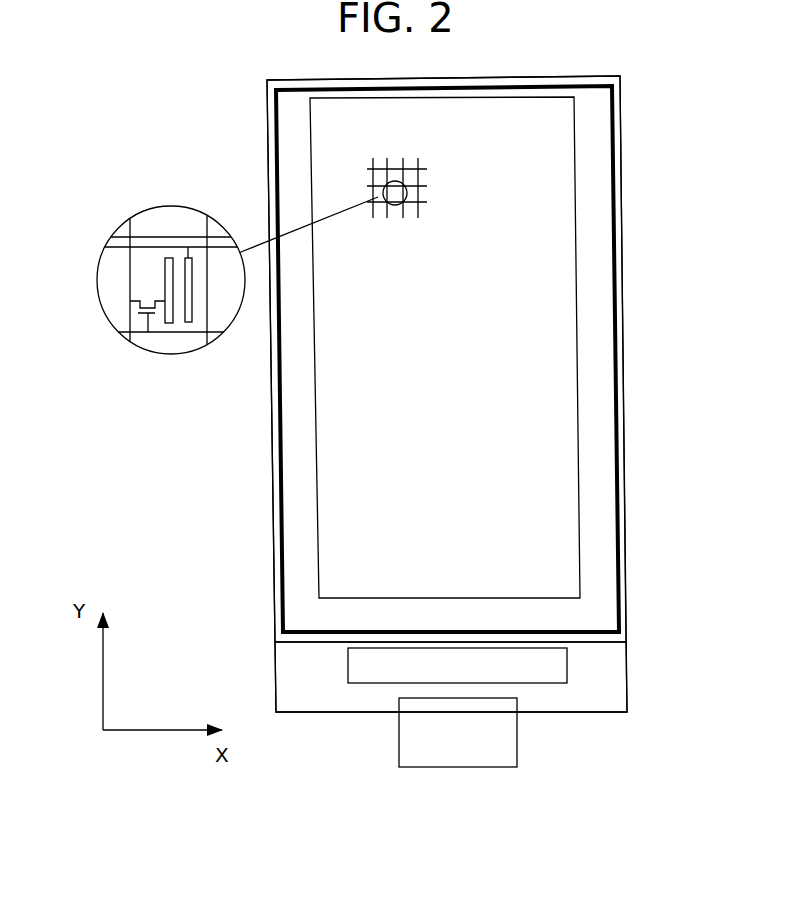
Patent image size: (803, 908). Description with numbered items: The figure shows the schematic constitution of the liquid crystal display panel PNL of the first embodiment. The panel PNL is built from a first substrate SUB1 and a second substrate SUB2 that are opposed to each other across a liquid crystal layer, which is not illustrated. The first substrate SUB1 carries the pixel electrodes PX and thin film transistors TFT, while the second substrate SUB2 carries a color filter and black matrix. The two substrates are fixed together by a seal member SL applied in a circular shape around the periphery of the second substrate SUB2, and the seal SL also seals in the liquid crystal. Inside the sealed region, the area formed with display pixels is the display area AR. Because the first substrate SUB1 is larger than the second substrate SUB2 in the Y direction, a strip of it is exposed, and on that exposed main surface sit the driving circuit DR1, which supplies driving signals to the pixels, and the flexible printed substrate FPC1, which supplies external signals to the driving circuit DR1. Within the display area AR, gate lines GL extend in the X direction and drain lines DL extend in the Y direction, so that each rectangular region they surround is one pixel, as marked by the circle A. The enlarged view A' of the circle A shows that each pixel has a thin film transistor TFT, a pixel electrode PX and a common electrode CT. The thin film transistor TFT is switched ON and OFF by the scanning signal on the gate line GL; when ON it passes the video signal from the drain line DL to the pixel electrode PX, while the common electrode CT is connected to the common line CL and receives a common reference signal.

The liquid crystal display panel PNL is at (628, 154).
The first substrate SUB1 is at (622, 677).
The second substrate SUB2 is at (625, 493).
The seal member SL is at (618, 422).
The display area AR is at (580, 293).
The driving circuit DR1 is at (375, 672).
The flexible printed substrate FPC1 is at (497, 740).
The drain line DL is at (420, 155).
The gate line GL is at (427, 207).
The common line CL is at (165, 242).
The pixel electrode PX is at (162, 272).
The common electrode CT is at (187, 322).
The thin film transistor TFT is at (138, 315).
The circle A is at (323, 219).
The enlarged view A' is at (159, 257).